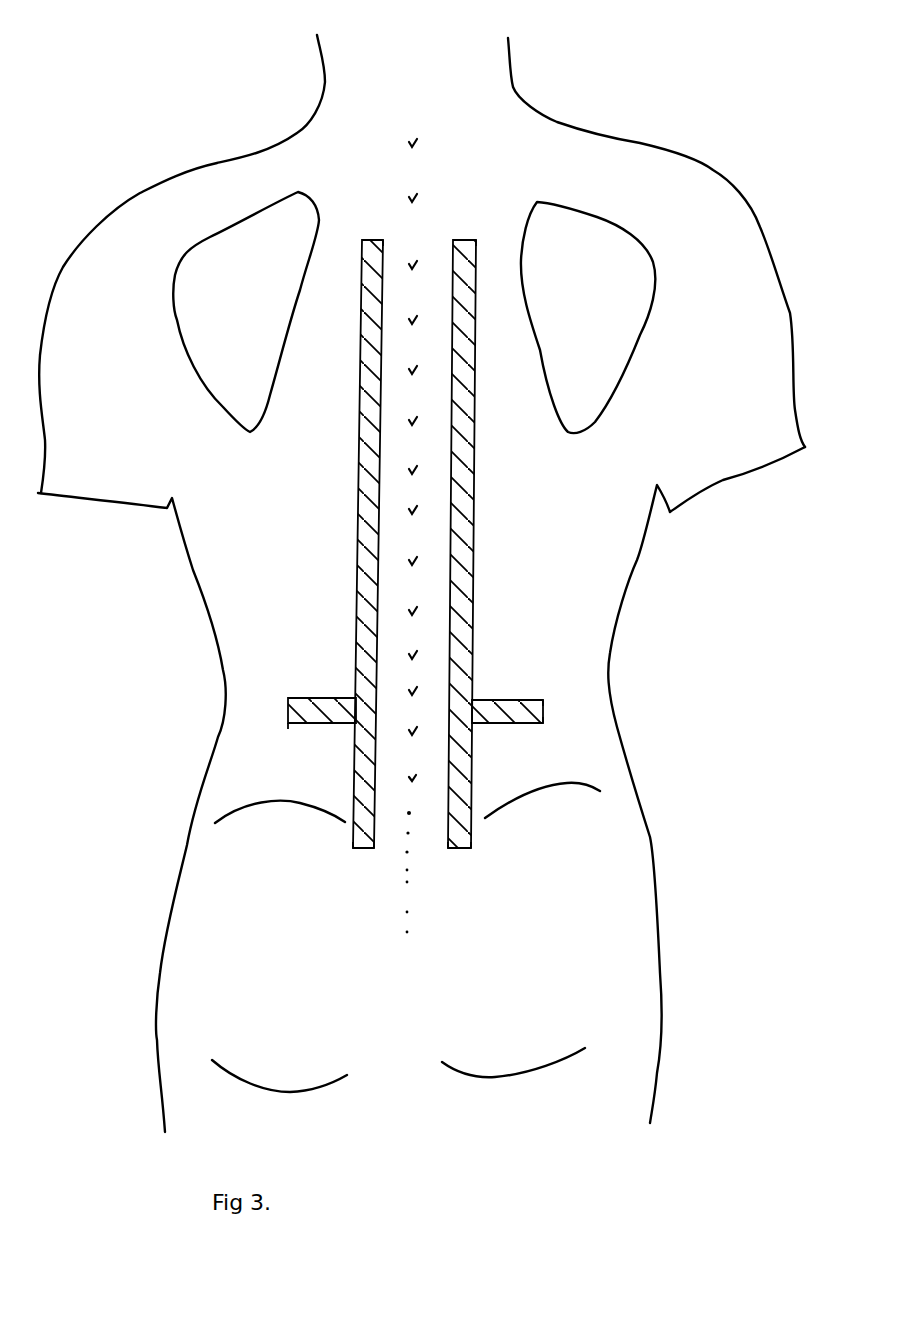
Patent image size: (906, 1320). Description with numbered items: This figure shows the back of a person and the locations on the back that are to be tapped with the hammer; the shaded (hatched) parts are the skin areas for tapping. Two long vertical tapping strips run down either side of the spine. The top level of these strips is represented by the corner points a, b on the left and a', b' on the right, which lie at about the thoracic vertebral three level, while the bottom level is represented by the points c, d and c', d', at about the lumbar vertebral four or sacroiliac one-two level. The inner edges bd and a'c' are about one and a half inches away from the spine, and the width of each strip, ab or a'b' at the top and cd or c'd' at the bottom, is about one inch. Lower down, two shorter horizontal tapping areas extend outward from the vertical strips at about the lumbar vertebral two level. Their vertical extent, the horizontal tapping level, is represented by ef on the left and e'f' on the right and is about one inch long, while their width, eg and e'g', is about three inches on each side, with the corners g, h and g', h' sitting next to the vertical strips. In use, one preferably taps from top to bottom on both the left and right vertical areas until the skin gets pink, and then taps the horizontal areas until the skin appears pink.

The top level point a is at (363, 538).
The top level point b is at (389, 238).
The bottom level point c is at (344, 860).
The bottom level point d is at (377, 860).
The horizontal tapping level point e is at (317, 699).
The horizontal tapping level point f is at (284, 736).
The horizontal tapping area point g is at (347, 685).
The horizontal tapping area point h is at (347, 736).
The top level point a' is at (456, 538).
The top level point b' is at (486, 238).
The bottom level point c' is at (441, 860).
The bottom level point d' is at (475, 860).
The horizontal tapping level point e' is at (507, 699).
The horizontal tapping level point f' is at (481, 736).
The horizontal tapping area point g' is at (543, 689).
The horizontal tapping area point h' is at (544, 733).